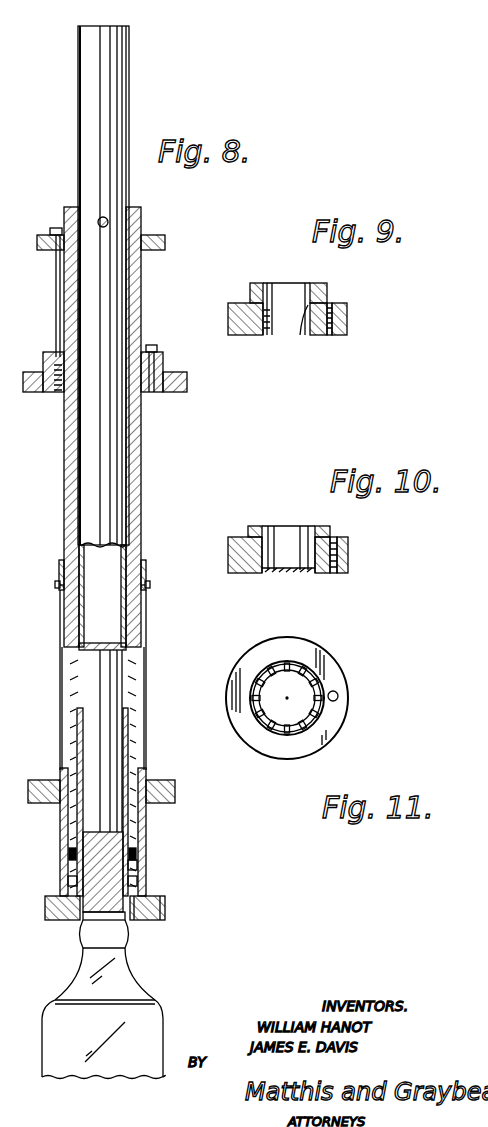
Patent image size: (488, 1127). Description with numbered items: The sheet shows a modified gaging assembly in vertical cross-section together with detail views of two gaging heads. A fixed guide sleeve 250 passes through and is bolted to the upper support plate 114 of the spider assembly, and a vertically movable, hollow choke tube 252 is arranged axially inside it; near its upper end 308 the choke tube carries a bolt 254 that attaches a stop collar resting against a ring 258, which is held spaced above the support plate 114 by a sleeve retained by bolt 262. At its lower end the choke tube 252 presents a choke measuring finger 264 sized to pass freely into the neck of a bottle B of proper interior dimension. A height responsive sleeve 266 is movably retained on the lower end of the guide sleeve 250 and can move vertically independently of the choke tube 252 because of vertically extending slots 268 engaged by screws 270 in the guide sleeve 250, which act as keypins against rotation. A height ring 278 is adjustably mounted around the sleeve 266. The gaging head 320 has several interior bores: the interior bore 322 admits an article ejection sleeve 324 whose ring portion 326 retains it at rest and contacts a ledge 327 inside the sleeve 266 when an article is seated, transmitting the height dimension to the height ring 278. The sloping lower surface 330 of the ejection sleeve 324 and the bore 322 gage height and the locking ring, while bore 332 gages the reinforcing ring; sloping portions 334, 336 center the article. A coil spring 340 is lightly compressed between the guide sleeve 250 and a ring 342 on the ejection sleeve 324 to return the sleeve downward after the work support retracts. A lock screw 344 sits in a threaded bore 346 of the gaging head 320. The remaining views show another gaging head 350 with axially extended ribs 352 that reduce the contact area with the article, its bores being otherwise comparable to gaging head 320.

In FIG. 8, the upper end of tube 308 is at (79, 26).
In FIG. 8, the choke tube 252 is at (129, 92).
In FIG. 8, the bolt 254 is at (107, 219).
In FIG. 8, the ring 258 is at (165, 240).
In FIG. 8, the bolt 262 is at (53, 289).
In FIG. 8, the upper support plate 114 is at (37, 372).
In FIG. 8, the guide sleeve 250 is at (141, 450).
In FIG. 8, the screws 270 is at (55, 586).
In FIG. 8, the slots 268 is at (63, 634).
In FIG. 8, the coil spring 340 is at (129, 684).
In FIG. 8, the height responsive sleeve 266 is at (61, 770).
In FIG. 8, the height ring 278 is at (165, 780).
In FIG. 8, the choke measuring finger 264 is at (105, 832).
In FIG. 8, the ring 342 is at (69, 855).
In FIG. 8, the ledge 327 is at (138, 866).
In FIG. 8, the ring portion 326 is at (67, 881).
In FIG. 8, the article ejection sleeve 324 is at (138, 884).
In FIG. 8, the gaging head 320 is at (47, 900).
In FIG. 9, the gaging head 320 is at (292, 307).
In FIG. 8, the lock screw 344 is at (166, 902).
In FIG. 8, the threaded bore 346 is at (140, 920).
In FIG. 9, the threaded bore 346 is at (333, 306).
In FIG. 8, the lower surface 330 is at (80, 920).
In FIG. 8, the bottle B is at (55, 1001).
In FIG. 9, the interior bore 322 is at (268, 283).
In FIG. 9, the bore 332 is at (245, 318).
In FIG. 9, the sloping portion 336 is at (264, 335).
In FIG. 9, the sloping portion 334 is at (304, 330).
In FIG. 10, the gaging head 350 is at (238, 565).
In FIG. 11, the gaging head 350 is at (333, 671).
In FIG. 10, the ribs 352 is at (285, 530).
In FIG. 11, the ribs 352 is at (315, 708).